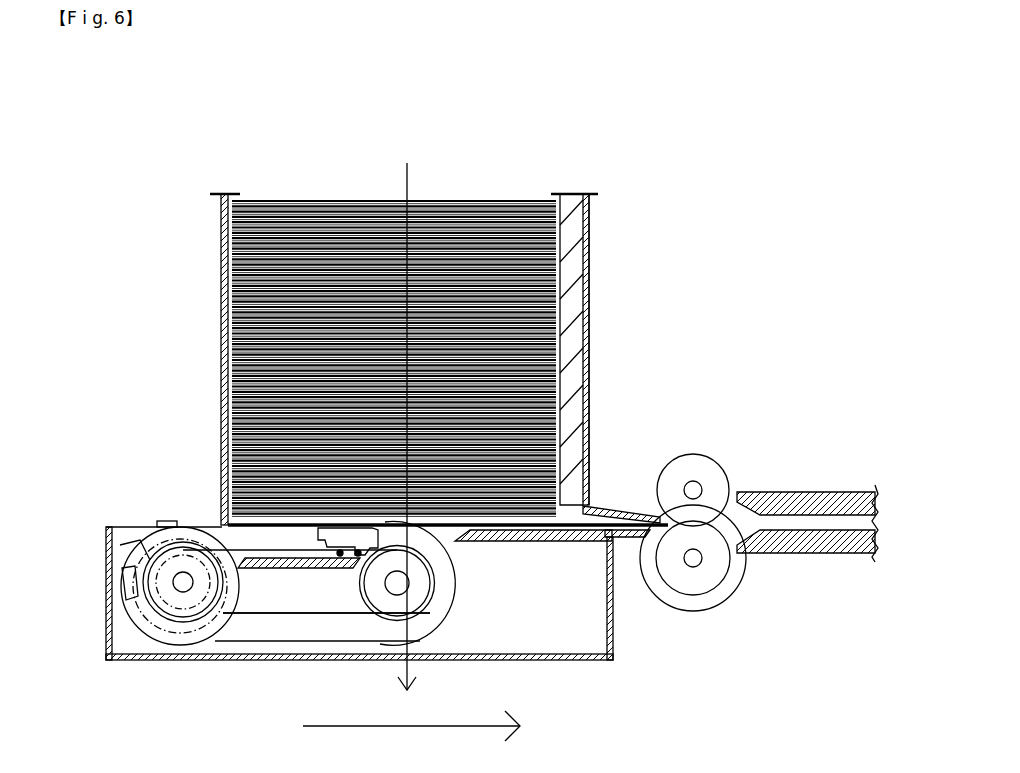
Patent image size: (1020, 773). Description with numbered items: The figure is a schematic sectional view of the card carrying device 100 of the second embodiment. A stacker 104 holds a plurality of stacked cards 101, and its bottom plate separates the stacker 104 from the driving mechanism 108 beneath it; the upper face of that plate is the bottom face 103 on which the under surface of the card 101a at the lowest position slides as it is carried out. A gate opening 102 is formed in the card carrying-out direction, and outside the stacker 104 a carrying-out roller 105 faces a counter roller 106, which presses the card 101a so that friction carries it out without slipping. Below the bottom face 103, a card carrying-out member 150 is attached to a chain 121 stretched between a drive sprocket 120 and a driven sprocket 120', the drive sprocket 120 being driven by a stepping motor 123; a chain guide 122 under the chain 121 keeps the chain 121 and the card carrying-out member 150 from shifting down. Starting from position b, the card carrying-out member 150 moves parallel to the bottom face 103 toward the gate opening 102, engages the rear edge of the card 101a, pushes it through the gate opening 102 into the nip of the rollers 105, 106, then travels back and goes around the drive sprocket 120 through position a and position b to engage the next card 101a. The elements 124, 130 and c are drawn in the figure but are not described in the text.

The card carrying device 100 is at (688, 206).
The cards 101 is at (483, 203).
The card at the lowest position 101a is at (530, 546).
The gate opening 102 is at (663, 562).
The bottom face 103 is at (216, 626).
The stacker 104 is at (146, 205).
The carrying-out roller 105 is at (715, 574).
The counter roller 106 is at (714, 466).
The driving mechanism 108 is at (96, 527).
The drive sprocket 120 is at (156, 612).
The driven sprocket 120' is at (449, 583).
The chain 121 is at (282, 616).
The chain guide 122 is at (299, 585).
The stepping motor 123 is at (170, 646).
The roller holder 124 is at (720, 598).
The driven roller 130 is at (438, 609).
The card carrying-out member 150 is at (350, 576).
The position a is at (126, 527).
The position b is at (196, 528).
The portion c is at (320, 535).